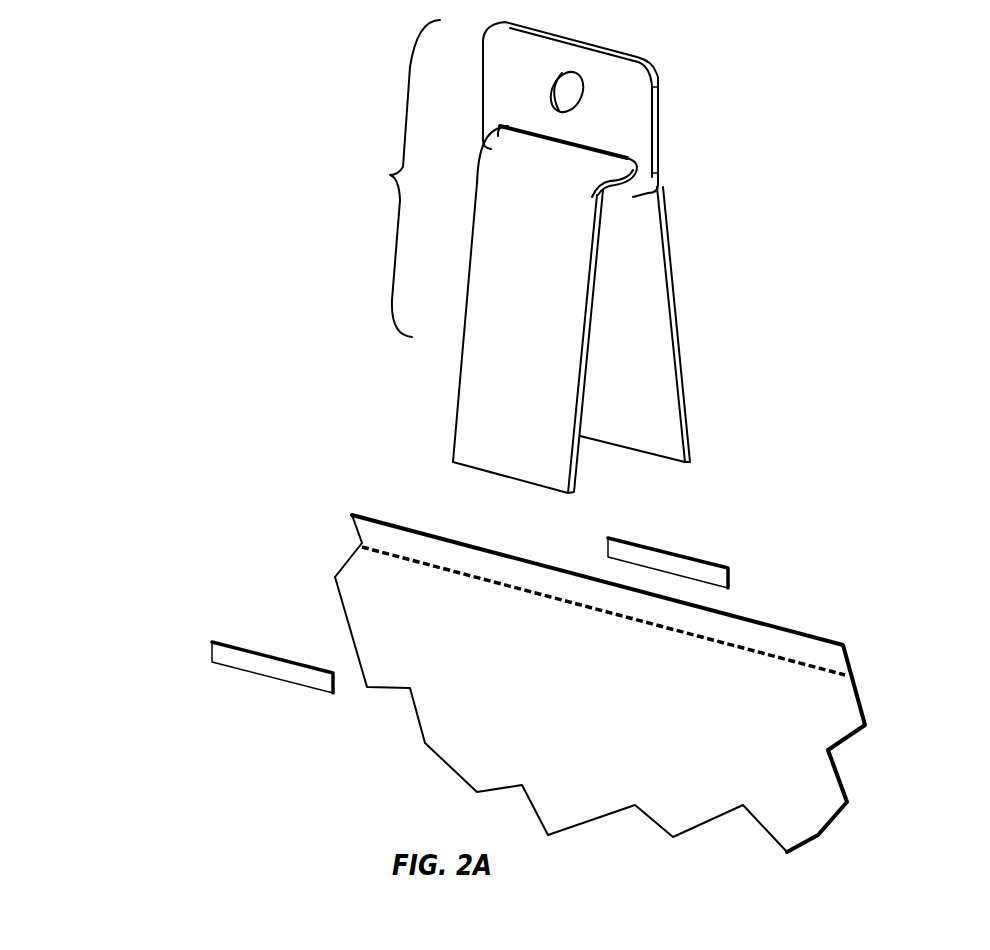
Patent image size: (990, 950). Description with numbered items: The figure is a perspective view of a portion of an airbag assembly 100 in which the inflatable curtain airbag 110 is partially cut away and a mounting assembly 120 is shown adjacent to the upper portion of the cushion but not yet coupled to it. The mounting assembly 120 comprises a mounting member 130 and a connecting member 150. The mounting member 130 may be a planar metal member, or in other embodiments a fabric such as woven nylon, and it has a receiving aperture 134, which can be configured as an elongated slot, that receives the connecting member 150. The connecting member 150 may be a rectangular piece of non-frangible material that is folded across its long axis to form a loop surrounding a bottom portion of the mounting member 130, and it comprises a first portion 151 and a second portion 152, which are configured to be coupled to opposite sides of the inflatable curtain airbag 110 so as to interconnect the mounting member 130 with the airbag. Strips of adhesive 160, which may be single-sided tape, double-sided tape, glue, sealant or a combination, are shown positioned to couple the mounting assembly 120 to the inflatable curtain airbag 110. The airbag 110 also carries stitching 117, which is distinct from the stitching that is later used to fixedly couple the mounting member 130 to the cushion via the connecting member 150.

The airbag assembly 100 is at (826, 138).
The inflatable curtain airbag 110 is at (869, 626).
The stitching 117 is at (815, 670).
The mounting assembly 120 is at (396, 178).
The mounting member 130 is at (633, 88).
The receiving aperture 134 is at (553, 90).
The connecting member 150 is at (642, 301).
The first portion 151 is at (642, 425).
The second portion 152 is at (522, 465).
The adhesive 160 is at (695, 572).